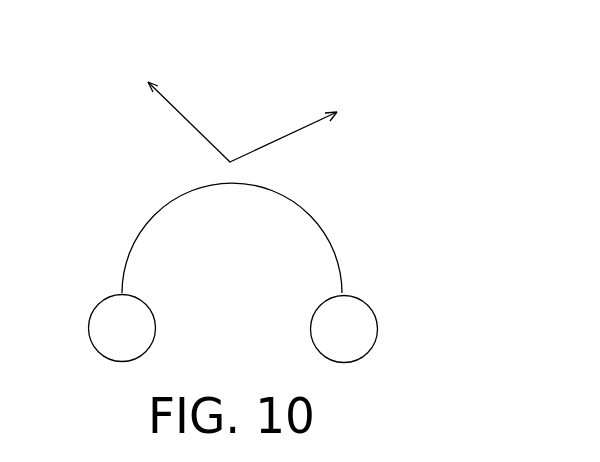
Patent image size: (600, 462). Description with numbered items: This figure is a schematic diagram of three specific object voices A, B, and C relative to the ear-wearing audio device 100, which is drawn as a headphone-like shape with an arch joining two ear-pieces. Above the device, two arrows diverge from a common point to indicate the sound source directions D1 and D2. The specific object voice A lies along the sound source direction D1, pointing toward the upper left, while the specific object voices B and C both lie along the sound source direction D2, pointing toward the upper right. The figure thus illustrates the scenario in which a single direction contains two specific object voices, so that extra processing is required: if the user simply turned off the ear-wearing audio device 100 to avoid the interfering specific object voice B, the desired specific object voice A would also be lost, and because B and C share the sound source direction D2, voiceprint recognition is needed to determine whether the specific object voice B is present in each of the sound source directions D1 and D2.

The ear-wearing audio device 100 is at (377, 327).
The sound source direction D1 is at (189, 122).
The sound source direction D2 is at (283, 138).
The specific object voice A is at (132, 66).
The specific object voice B is at (342, 108).
The specific object voice C is at (332, 108).